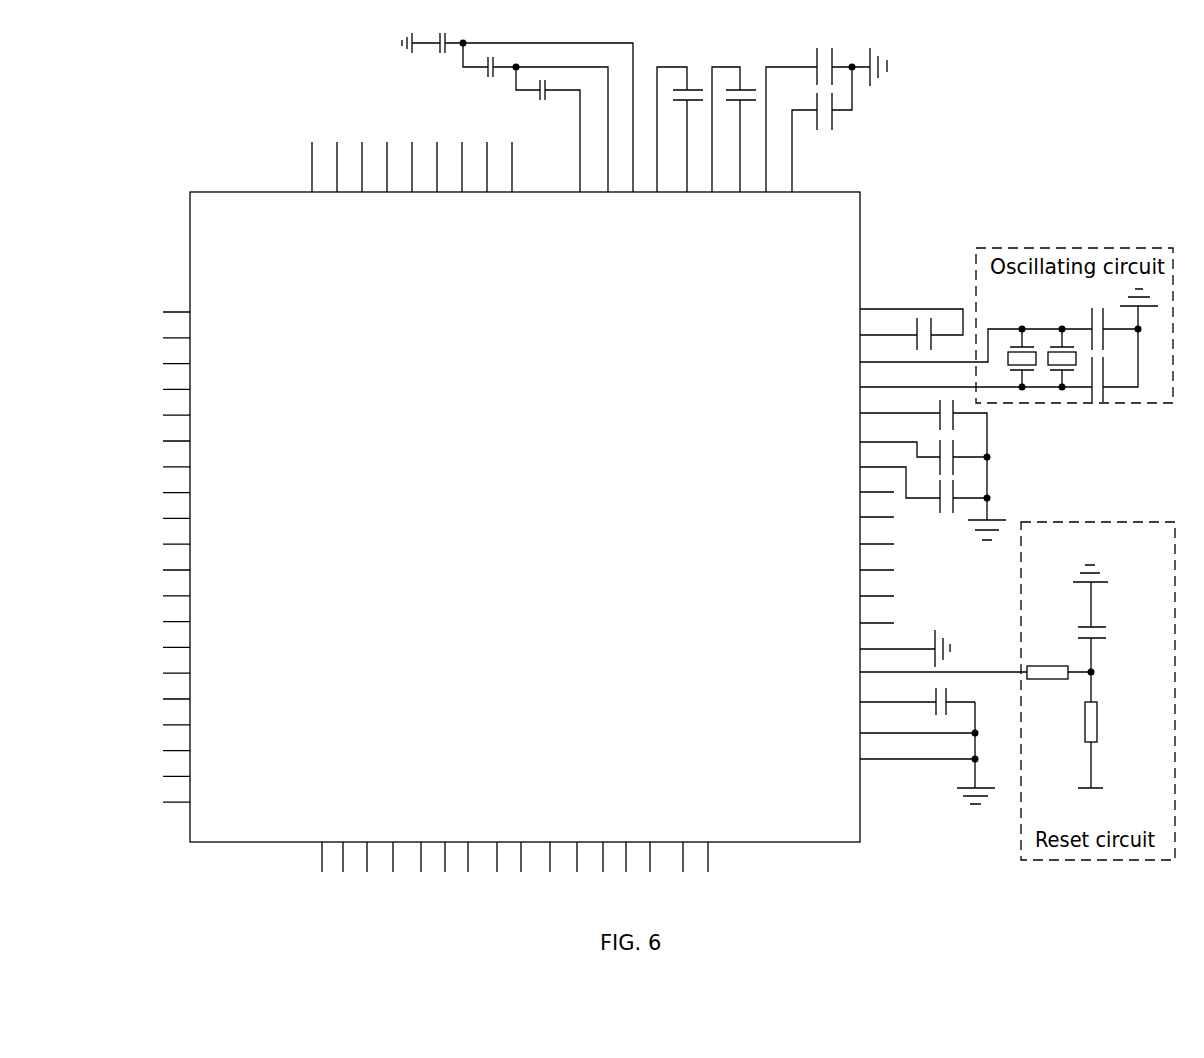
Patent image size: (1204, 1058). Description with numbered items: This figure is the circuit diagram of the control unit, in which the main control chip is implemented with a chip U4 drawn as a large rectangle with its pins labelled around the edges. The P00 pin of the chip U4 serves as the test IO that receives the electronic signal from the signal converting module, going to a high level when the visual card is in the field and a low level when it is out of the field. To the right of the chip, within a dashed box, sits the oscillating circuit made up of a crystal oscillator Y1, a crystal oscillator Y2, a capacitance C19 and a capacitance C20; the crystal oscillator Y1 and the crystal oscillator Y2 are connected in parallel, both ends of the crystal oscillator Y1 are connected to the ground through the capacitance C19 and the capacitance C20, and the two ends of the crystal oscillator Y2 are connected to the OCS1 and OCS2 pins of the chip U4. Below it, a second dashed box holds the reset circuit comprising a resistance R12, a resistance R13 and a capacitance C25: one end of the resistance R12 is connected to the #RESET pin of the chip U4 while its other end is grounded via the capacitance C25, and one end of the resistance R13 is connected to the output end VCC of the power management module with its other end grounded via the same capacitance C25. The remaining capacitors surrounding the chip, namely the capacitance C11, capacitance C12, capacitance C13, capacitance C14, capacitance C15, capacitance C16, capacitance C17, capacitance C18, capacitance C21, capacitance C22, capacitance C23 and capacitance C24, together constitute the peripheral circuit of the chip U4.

The chip U4 is at (583, 507).
The capacitance C11 is at (517, 112).
The capacitance C12 is at (535, 117).
The capacitance C13 is at (548, 129).
The capacitance C14 is at (680, 129).
The capacitance C15 is at (734, 129).
The capacitance C16 is at (859, 118).
The capacitance C17 is at (813, 129).
The capacitance C18 is at (911, 329).
The capacitance C19 is at (1117, 318).
The capacitance C20 is at (1112, 365).
The capacitance C21 is at (923, 424).
The capacitance C22 is at (948, 457).
The capacitance C23 is at (948, 512).
The capacitance C24 is at (917, 710).
The capacitance C25 is at (1081, 604).
The crystal oscillator Y1 is at (1060, 346).
The crystal oscillator Y2 is at (1015, 346).
The resistance R12 is at (977, 687).
The resistance R13 is at (1106, 744).